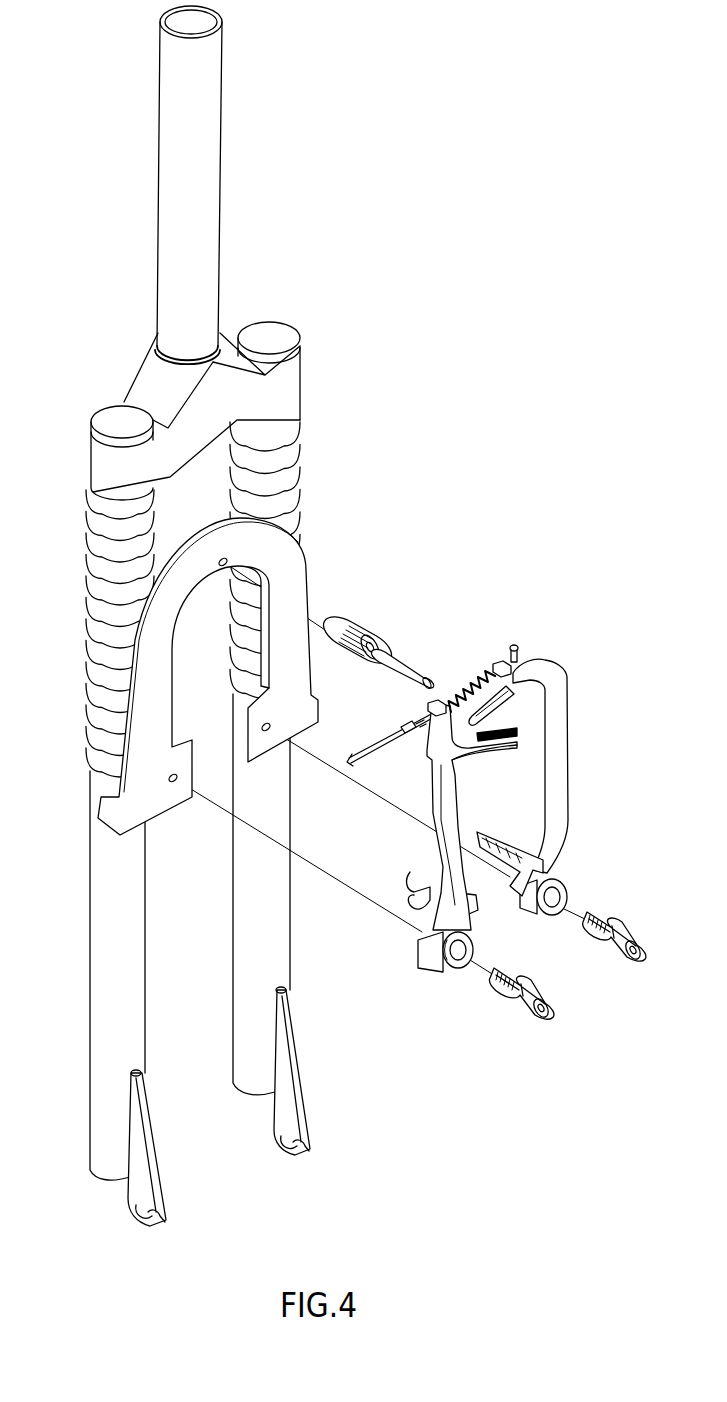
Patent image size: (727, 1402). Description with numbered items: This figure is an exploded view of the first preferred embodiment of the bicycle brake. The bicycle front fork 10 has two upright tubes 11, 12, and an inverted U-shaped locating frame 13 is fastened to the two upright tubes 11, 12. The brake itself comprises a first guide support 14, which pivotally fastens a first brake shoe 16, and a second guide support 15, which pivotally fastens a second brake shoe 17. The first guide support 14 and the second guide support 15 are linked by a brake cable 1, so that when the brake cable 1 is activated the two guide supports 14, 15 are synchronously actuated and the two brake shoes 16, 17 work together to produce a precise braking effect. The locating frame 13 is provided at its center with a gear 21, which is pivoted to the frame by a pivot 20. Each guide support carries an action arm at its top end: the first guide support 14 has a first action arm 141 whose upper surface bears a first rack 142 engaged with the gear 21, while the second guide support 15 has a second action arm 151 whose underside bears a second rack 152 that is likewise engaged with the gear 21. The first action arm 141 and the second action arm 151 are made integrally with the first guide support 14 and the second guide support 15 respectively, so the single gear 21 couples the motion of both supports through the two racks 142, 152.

The bicycle front fork 10 is at (358, 222).
The upright tube 11 is at (97, 1066).
The upright tube 12 is at (253, 1078).
The locating frame 13 is at (286, 545).
The first guide support 14 is at (501, 837).
The first action arm 141 is at (485, 754).
The first rack 142 is at (522, 731).
The second guide support 15 is at (556, 780).
The second action arm 151 is at (487, 697).
The second rack 152 is at (522, 697).
The first brake shoe 16 is at (482, 906).
The second brake shoe 17 is at (540, 867).
The pivot 20 is at (402, 660).
The gear 21 is at (362, 621).
The brake cable 1 is at (392, 730).